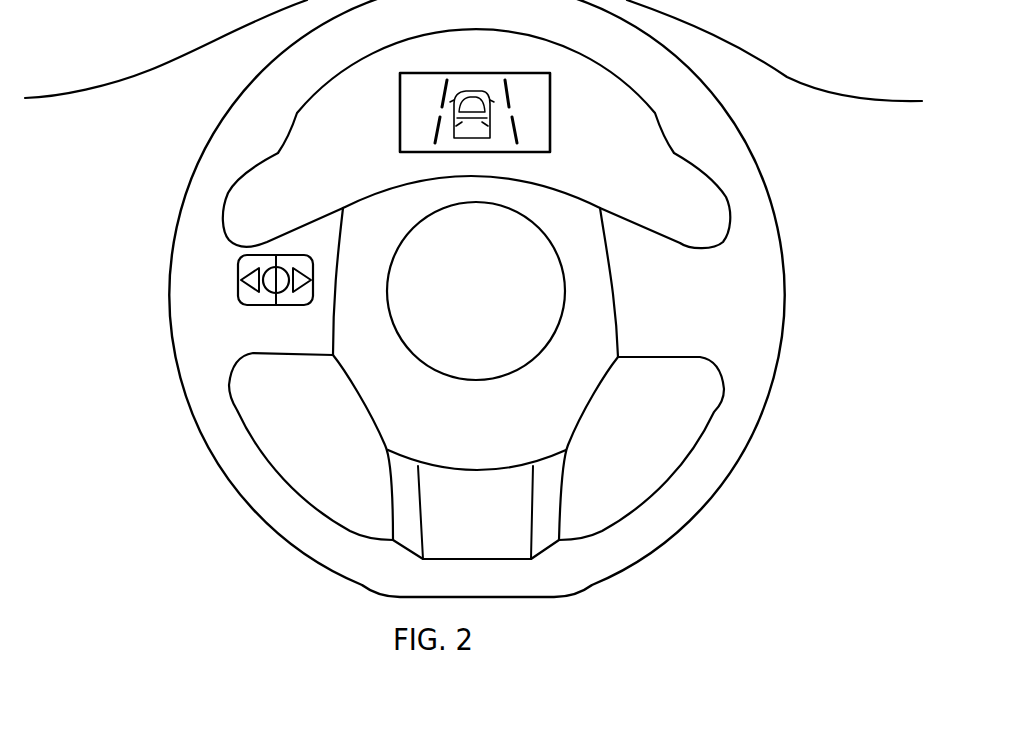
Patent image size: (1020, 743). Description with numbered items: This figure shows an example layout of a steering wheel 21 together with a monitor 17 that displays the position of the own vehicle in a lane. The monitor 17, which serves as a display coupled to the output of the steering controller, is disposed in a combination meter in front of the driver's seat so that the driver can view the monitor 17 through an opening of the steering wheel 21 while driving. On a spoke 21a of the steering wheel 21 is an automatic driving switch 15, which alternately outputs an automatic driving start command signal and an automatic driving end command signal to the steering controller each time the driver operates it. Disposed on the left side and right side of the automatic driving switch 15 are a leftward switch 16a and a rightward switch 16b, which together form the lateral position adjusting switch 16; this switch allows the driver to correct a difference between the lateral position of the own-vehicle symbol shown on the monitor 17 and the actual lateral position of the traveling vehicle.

The automatic driving switch 15 is at (180, 304).
The lateral position adjusting switch 16 is at (179, 316).
The leftward switch 16a is at (243, 293).
The rightward switch 16b is at (293, 307).
The monitor 17 is at (550, 113).
The steering wheel 21 is at (748, 150).
The spoke 21a is at (287, 356).